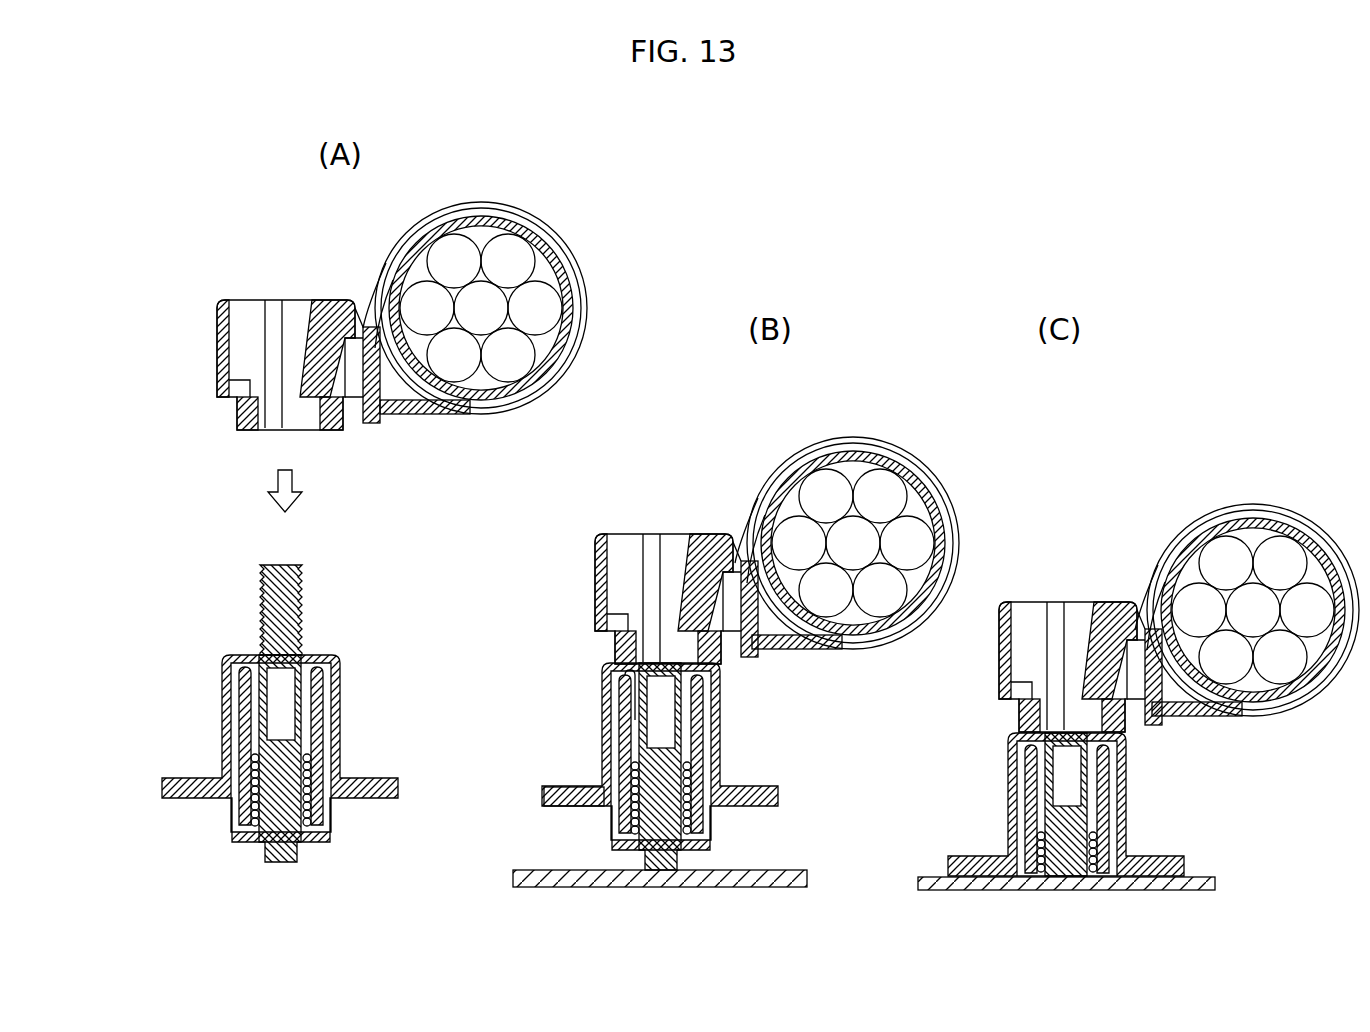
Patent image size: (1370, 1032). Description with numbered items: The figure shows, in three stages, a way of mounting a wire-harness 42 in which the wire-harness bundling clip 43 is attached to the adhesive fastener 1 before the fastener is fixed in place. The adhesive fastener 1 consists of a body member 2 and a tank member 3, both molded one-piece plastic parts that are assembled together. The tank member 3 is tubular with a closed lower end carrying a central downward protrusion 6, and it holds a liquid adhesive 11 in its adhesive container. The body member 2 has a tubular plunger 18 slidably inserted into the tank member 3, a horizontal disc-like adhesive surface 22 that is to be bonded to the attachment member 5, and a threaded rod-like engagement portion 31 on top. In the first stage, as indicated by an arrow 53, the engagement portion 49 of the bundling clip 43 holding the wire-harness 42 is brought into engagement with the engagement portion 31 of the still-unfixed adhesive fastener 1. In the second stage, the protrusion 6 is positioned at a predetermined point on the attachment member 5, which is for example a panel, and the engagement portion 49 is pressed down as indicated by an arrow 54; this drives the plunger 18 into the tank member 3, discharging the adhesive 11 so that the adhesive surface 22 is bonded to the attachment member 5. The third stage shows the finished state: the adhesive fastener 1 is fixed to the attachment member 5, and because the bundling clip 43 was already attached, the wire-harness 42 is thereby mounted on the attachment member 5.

The adhesive fastener 1 is at (674, 751).
The body member 2 is at (347, 707).
The tank member 3 is at (343, 752).
The attachment member 5 is at (762, 882).
The protrusion 6 is at (667, 862).
The liquid adhesive 11 is at (312, 822).
The plunger 18 is at (633, 705).
The adhesive surface 22 is at (562, 795).
The engagement portion 31 is at (292, 593).
The wire-harness 42 is at (505, 258).
The wire-harness bundling clip 43 is at (300, 268).
The engagement portion 49 is at (256, 304).
The arrow 53 is at (303, 497).
The arrow 54 is at (660, 515).